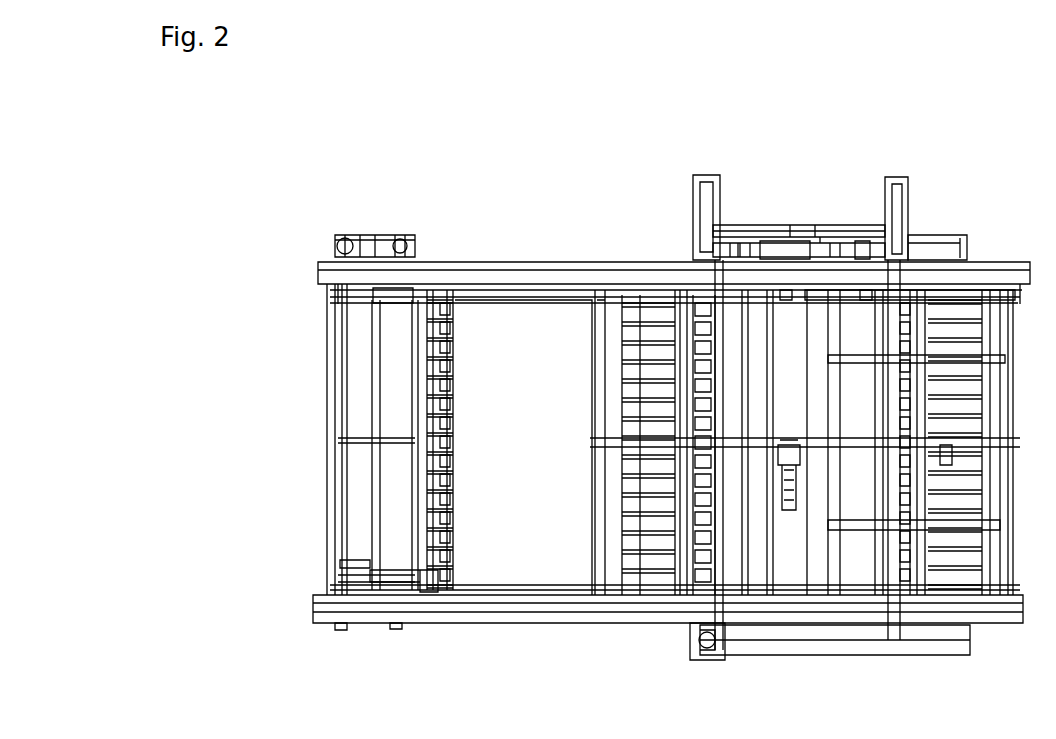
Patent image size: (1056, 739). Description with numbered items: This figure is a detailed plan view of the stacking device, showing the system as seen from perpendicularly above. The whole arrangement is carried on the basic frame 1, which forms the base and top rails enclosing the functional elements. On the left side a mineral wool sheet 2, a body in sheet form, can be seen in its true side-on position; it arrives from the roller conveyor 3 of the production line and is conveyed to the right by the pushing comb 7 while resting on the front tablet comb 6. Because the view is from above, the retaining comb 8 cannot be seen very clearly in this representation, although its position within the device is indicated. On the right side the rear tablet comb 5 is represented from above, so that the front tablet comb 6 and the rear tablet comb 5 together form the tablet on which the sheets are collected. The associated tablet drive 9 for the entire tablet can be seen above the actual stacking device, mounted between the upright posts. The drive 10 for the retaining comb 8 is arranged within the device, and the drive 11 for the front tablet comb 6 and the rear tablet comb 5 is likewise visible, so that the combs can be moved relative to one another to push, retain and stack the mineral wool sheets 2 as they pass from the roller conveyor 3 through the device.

The basic frame 1 is at (972, 617).
The mineral wool sheet 2 is at (675, 290).
The roller conveyor of the production line 3 is at (438, 582).
The rear tablet comb 5 is at (963, 322).
The front tablet comb 6 is at (655, 505).
The pushing comb 7 is at (428, 300).
The retaining comb 8 is at (723, 225).
The tablet drive 9 is at (827, 227).
The drive for retaining comb 10 is at (668, 578).
The drive for tablet combs 11 is at (790, 512).